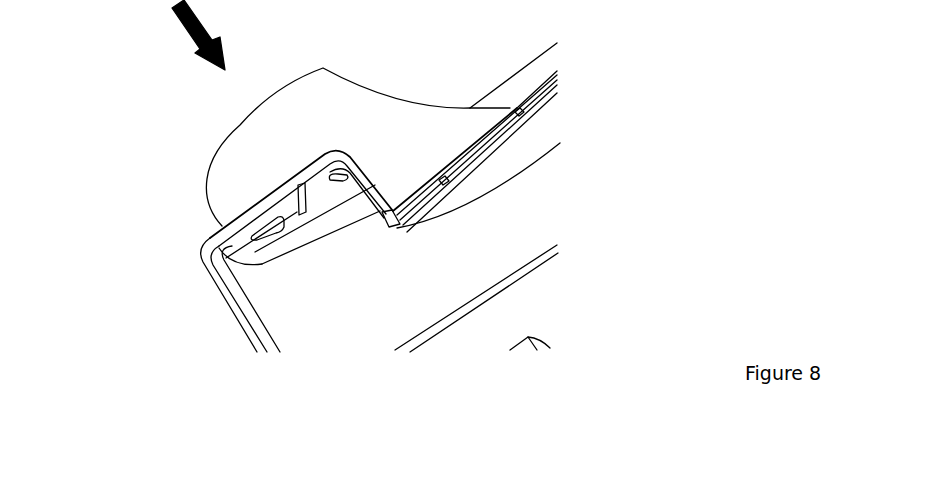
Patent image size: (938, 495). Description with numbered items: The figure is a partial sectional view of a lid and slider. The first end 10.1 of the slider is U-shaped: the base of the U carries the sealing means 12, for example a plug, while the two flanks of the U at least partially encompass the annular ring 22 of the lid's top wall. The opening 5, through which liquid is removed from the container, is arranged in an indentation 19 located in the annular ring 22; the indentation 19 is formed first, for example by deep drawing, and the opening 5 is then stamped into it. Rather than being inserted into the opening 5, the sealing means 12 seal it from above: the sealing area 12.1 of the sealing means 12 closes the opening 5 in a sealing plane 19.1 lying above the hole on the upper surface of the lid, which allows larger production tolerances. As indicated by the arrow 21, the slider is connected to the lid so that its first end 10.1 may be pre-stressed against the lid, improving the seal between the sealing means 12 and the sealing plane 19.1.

The opening 5 is at (297, 224).
The first end of the slider 10.1 is at (178, 162).
The sealing means 12 is at (263, 187).
The sealing area 12.1 is at (281, 225).
The indentation 19 is at (266, 228).
The sealing plane 19.1 is at (301, 183).
The arrow 21 is at (183, 28).
The annular ring 22 is at (300, 291).